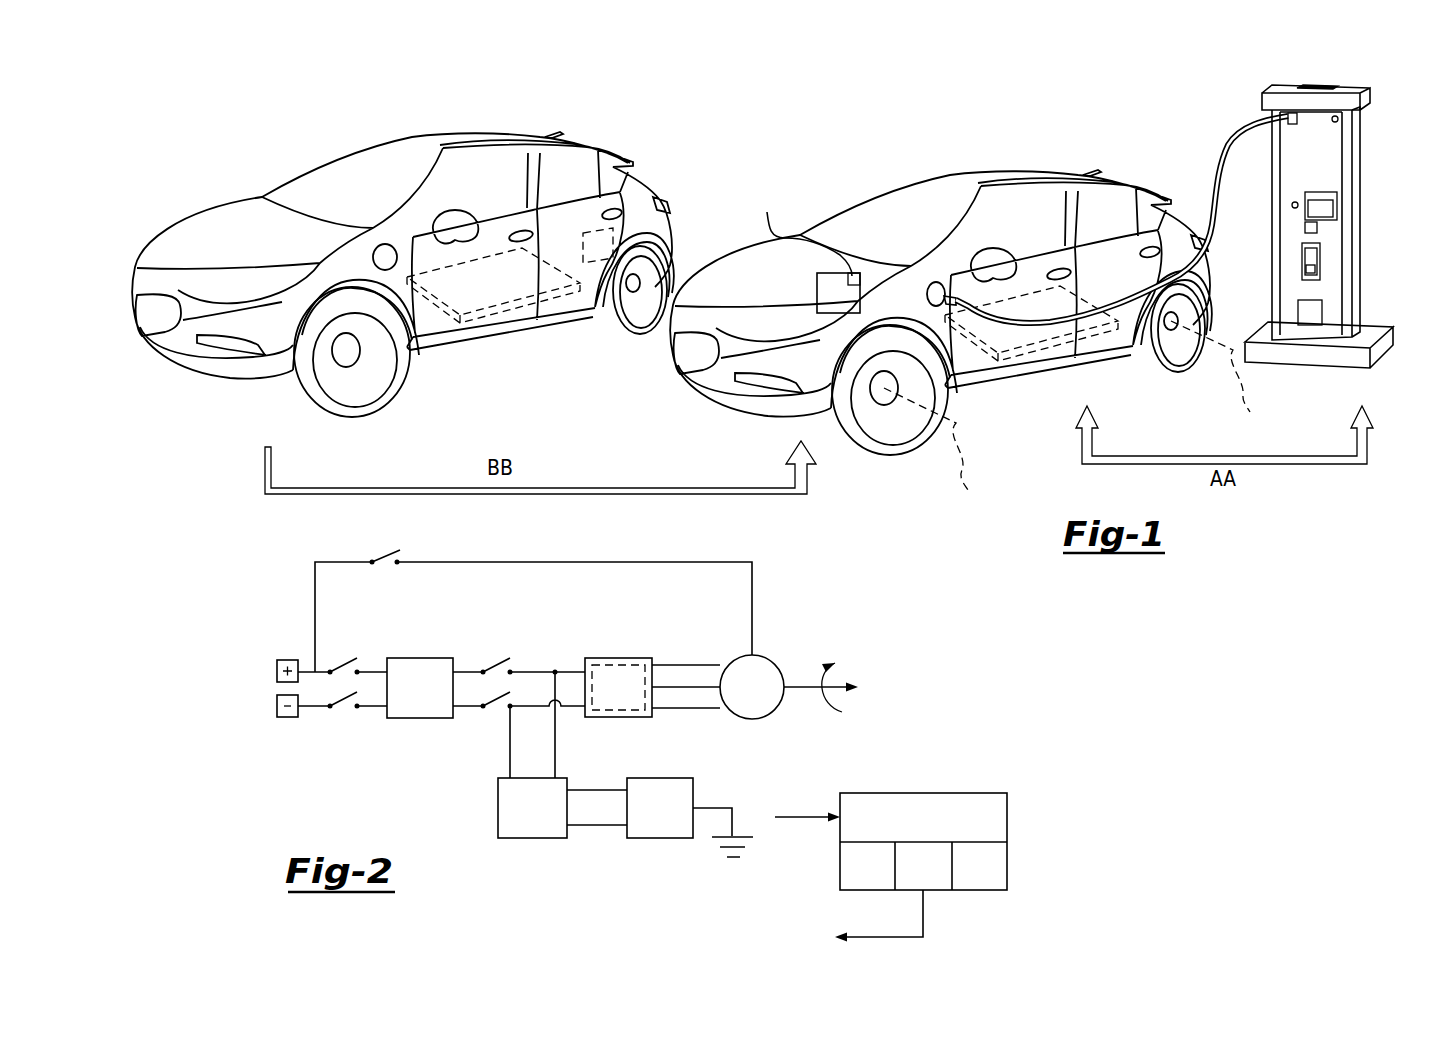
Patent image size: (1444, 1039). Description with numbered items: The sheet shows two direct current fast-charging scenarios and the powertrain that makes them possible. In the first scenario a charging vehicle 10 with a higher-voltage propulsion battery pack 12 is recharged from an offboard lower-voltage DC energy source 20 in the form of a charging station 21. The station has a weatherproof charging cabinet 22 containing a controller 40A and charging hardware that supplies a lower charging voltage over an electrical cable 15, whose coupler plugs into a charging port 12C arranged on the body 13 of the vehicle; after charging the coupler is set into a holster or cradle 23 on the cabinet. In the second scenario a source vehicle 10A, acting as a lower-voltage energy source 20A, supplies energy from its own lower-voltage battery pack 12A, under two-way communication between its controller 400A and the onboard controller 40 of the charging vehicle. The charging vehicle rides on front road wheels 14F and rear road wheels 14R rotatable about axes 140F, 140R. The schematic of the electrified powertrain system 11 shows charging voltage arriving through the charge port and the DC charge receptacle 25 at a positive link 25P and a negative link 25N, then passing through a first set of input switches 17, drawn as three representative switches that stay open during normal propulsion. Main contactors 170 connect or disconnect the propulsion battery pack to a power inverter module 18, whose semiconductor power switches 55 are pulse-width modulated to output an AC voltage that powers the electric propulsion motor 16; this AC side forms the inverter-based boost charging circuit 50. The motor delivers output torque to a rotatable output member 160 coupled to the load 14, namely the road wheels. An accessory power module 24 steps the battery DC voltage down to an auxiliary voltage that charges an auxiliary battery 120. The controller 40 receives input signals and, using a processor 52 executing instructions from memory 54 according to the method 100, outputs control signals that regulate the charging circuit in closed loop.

In FIG. 1, the charging vehicle 10 is at (1084, 113).
In FIG. 1, the source vehicle 10A is at (544, 80).
In FIG. 1, the electrified powertrain system 11 is at (838, 293).
In FIG. 2, the electrified powertrain system 11 is at (822, 595).
In FIG. 1, the propulsion battery pack 12 is at (1040, 352).
In FIG. 2, the propulsion battery pack 12 is at (418, 658).
In FIG. 1, the lower-voltage battery pack 12A is at (500, 313).
In FIG. 1, the charging port 12C is at (928, 292).
In FIG. 1, the body 13 is at (915, 179).
In FIG. 2, the load (road wheels) 14 is at (842, 688).
In FIG. 1, the front road wheels 14F is at (904, 441).
In FIG. 1, the rear road wheels 14R is at (1167, 363).
In FIG. 1, the front axis 140F is at (939, 449).
In FIG. 1, the rear axis 140R is at (1221, 382).
In FIG. 1, the electrical cable 15 is at (1222, 130).
In FIG. 2, the electric propulsion motor 16 is at (757, 656).
In FIG. 2, the first set of input switches 17 is at (383, 605).
In FIG. 2, the power inverter module 18 is at (618, 658).
In FIG. 1, the lower-voltage DC energy source 20 is at (1303, 68).
In FIG. 1, the lower-voltage energy source 20A is at (266, 125).
In FIG. 1, the charging station 21 is at (1385, 100).
In FIG. 1, the charging cabinet 22 is at (1360, 193).
In FIG. 1, the holster or cradle 23 is at (1322, 272).
In FIG. 2, the accessory power module 24 is at (533, 838).
In FIG. 2, the DC charge receptacle 25 is at (327, 727).
In FIG. 2, the positive link 25P is at (277, 672).
In FIG. 2, the negative link 25N is at (277, 706).
In FIG. 1, the controller 40 is at (803, 231).
In FIG. 2, the controller 40 is at (891, 863).
In FIG. 1, the controller 40A is at (1305, 313).
In FIG. 2, the inverter-based boost charging circuit 50 is at (742, 632).
In FIG. 2, the processor 52 is at (933, 866).
In FIG. 2, the memory 54 is at (978, 869).
In FIG. 2, the semiconductor power switches 55 is at (630, 712).
In FIG. 2, the method 100 is at (874, 866).
In FIG. 2, the auxiliary battery 120 is at (660, 838).
In FIG. 2, the rotatable output member 160 is at (799, 692).
In FIG. 2, the main contactors 170 is at (507, 618).
In FIG. 1, the controller 400A is at (600, 267).